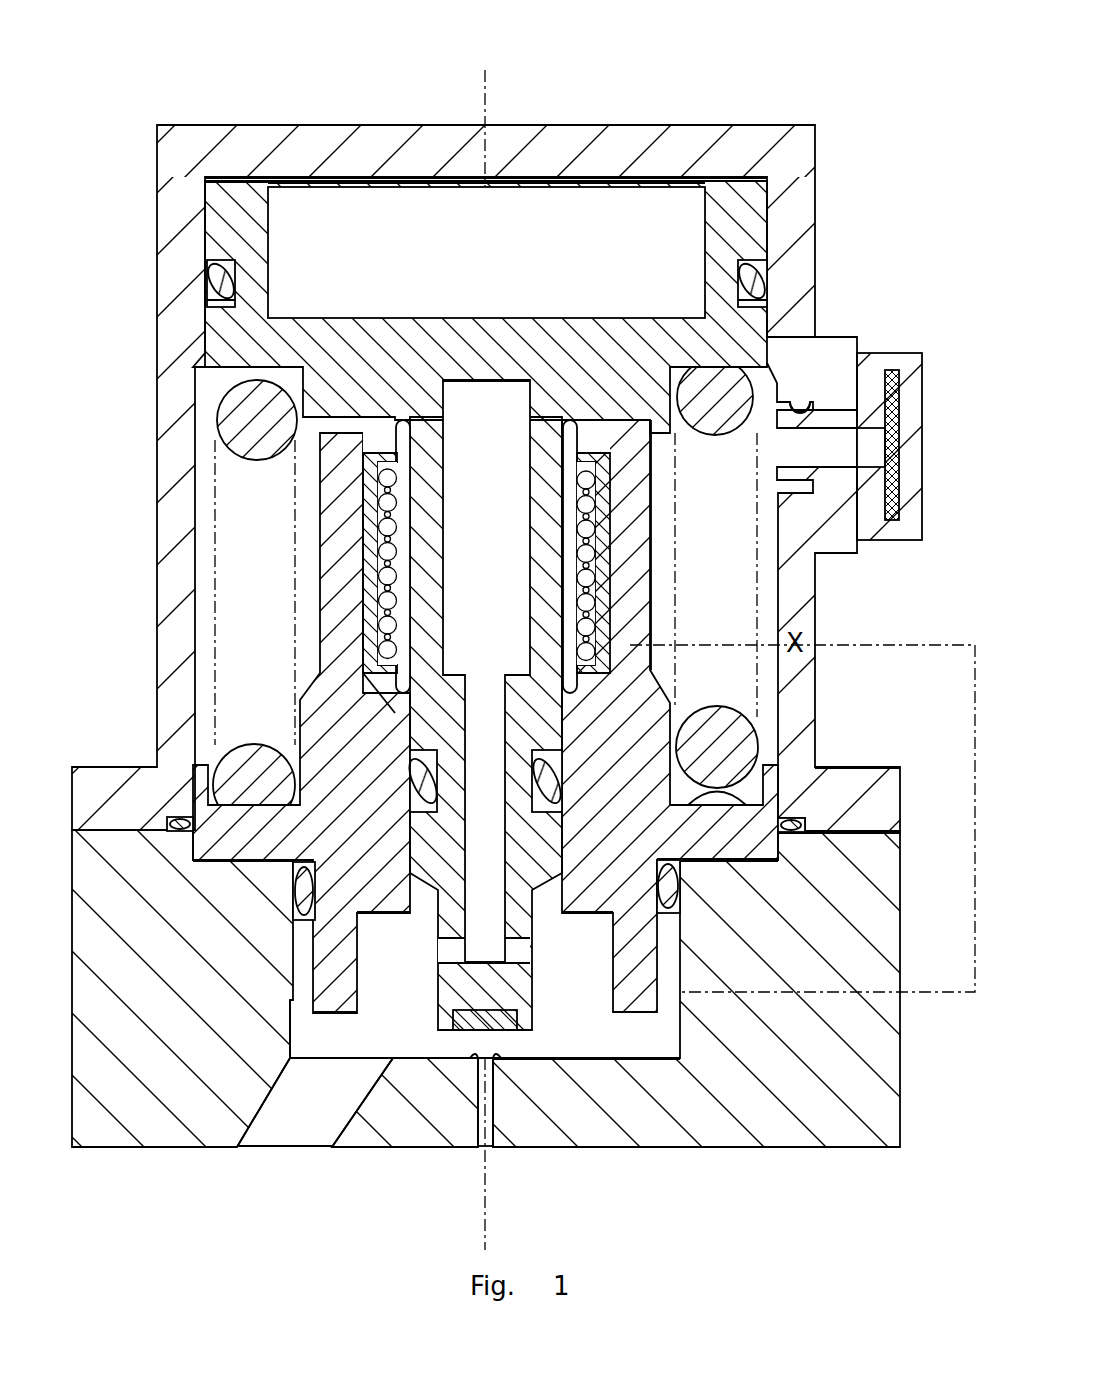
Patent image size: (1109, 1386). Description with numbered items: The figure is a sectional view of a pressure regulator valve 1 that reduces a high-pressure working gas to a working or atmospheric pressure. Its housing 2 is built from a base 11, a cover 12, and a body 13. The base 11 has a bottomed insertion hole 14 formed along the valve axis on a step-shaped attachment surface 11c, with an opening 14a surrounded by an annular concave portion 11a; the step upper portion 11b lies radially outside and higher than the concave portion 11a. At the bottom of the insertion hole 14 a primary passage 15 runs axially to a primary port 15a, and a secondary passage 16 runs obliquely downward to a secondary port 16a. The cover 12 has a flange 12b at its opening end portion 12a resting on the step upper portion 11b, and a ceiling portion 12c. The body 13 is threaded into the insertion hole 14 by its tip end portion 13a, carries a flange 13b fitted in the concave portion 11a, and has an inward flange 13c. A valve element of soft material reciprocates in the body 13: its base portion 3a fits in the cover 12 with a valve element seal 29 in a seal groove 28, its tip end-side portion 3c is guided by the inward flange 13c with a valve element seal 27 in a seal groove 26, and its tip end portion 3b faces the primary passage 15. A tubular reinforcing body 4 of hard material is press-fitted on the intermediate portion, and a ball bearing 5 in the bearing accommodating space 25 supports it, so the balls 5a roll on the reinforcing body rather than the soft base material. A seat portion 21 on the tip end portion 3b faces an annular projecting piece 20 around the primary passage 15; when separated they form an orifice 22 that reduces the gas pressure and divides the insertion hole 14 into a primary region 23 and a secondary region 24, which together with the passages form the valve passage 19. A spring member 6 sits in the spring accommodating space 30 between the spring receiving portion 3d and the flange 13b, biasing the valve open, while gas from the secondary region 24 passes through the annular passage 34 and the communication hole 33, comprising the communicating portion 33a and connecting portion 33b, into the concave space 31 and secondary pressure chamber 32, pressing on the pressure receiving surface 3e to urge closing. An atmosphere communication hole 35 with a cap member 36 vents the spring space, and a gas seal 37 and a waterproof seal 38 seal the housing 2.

The pressure regulator valve 1 is at (838, 70).
The housing 2 is at (533, 662).
The base portion 3a is at (504, 254).
The tip end portion 3b is at (532, 1020).
The tip end-side portion 3c is at (432, 846).
The spring receiving portion 3d is at (203, 372).
The pressure receiving surface 3e is at (232, 180).
The tubular reinforcing body 4 is at (568, 438).
The ball bearing 5 is at (604, 467).
The balls 5a is at (376, 494).
The spring member 6 is at (750, 732).
The base 11 is at (890, 1072).
The concave portion 11a is at (770, 850).
The step upper portion 11b is at (888, 818).
The attachment surface 11c is at (190, 862).
The cover 12 is at (820, 258).
The opening end portion 12a is at (807, 835).
The flange 12b is at (860, 772).
The ceiling portion 12c is at (355, 180).
The body 13 is at (317, 697).
The tip end portion 13a is at (333, 960).
The flange 13b is at (713, 862).
The inward flange 13c is at (568, 853).
The insertion hole 14 is at (300, 927).
The opening 14a is at (292, 857).
The primary passage 15 is at (502, 1078).
The primary port 15a is at (505, 1150).
The secondary passage 16 is at (273, 1120).
The secondary port 16a is at (325, 1150).
The valve passage 19 is at (441, 1103).
The projecting piece 20 is at (458, 1060).
The seat portion 21 is at (500, 1023).
The orifice 22 is at (470, 1040).
The primary region 23 is at (535, 1065).
The secondary region 24 is at (305, 1032).
The bearing accommodating space 25 is at (652, 538).
The seal groove 26 is at (546, 747).
The valve element seal 27 is at (563, 790).
The seal groove 28 is at (752, 278).
The valve element seal 29 is at (757, 298).
The spring accommodating space 30 is at (750, 617).
The concave space 31 is at (538, 254).
The secondary pressure chamber 32 is at (540, 182).
The communication hole 33 is at (450, 696).
The communicating portion 33a is at (486, 722).
The connecting portion 33b is at (442, 953).
The annular passage 34 is at (388, 940).
The atmosphere communication hole 35 is at (795, 402).
The cap member 36 is at (872, 362).
The gas seal 37 is at (684, 906).
The waterproof seal 38 is at (800, 822).